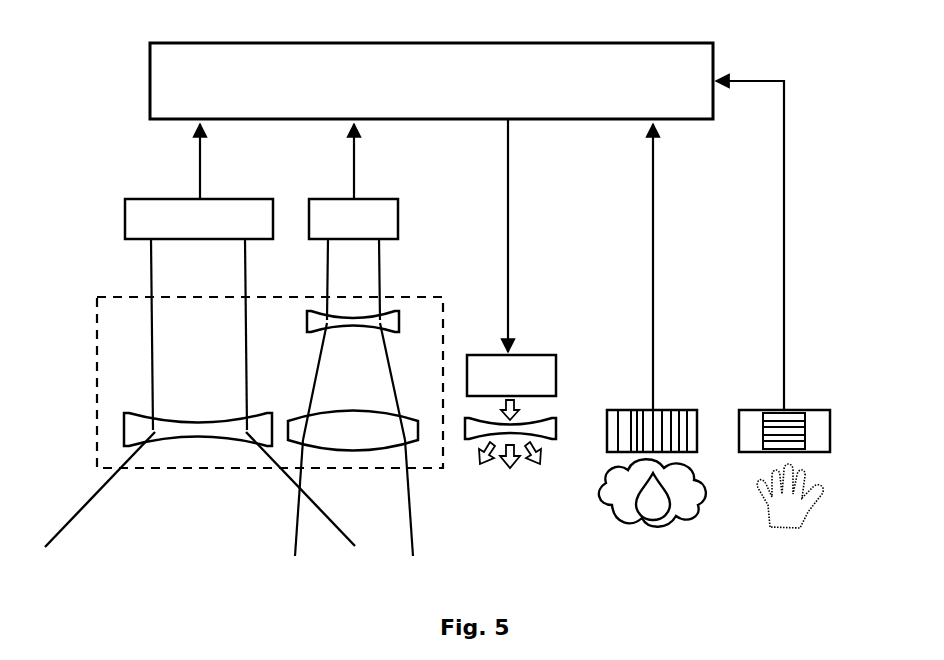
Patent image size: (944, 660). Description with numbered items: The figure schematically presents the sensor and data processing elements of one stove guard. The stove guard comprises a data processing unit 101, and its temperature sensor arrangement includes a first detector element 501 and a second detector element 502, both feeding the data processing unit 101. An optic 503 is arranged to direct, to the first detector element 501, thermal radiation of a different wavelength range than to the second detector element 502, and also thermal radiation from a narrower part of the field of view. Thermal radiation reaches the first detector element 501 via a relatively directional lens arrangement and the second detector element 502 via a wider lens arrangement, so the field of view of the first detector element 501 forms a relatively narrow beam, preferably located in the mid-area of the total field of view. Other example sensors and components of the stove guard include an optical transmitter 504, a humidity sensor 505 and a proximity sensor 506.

The data processing unit 101 is at (713, 44).
The first detector element 501 is at (372, 199).
The second detector element 502 is at (245, 199).
The optic 503 is at (443, 297).
The optical transmitter 504 is at (556, 355).
The humidity sensor 505 is at (677, 410).
The proximity sensor 506 is at (812, 410).